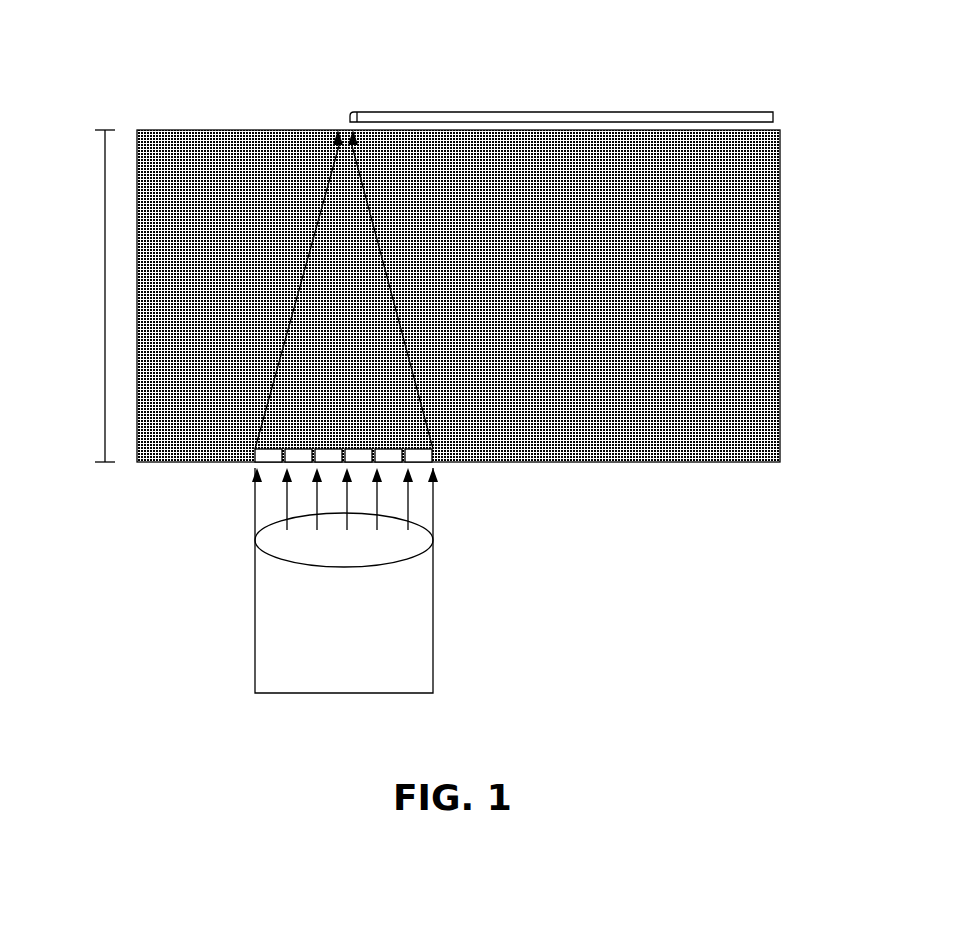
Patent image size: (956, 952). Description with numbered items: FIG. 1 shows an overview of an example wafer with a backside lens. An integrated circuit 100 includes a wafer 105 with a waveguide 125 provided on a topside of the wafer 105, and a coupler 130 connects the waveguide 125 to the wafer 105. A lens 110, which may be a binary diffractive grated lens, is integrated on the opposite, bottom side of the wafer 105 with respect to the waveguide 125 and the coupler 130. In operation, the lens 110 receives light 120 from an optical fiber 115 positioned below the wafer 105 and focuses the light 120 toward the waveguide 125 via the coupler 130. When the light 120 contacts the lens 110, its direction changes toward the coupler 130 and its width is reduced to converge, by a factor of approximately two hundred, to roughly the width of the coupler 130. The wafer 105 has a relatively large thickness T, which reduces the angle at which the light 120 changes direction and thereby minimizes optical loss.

The integrated circuit 100 is at (166, 33).
The wafer 105 is at (731, 446).
The lens 110 is at (255, 452).
The optical fiber 115 is at (425, 626).
The light 120 is at (437, 503).
The waveguide 125 is at (418, 112).
The coupler 130 is at (346, 128).